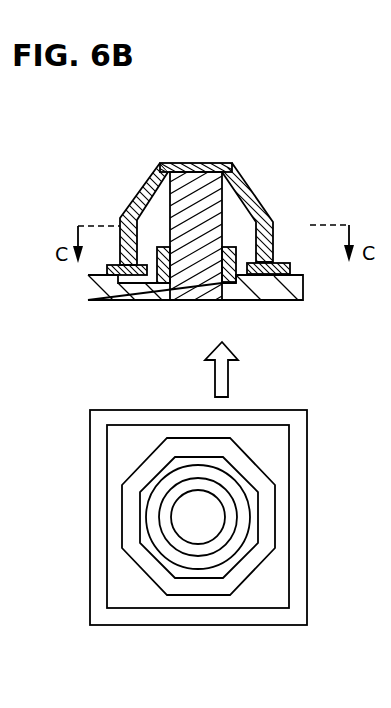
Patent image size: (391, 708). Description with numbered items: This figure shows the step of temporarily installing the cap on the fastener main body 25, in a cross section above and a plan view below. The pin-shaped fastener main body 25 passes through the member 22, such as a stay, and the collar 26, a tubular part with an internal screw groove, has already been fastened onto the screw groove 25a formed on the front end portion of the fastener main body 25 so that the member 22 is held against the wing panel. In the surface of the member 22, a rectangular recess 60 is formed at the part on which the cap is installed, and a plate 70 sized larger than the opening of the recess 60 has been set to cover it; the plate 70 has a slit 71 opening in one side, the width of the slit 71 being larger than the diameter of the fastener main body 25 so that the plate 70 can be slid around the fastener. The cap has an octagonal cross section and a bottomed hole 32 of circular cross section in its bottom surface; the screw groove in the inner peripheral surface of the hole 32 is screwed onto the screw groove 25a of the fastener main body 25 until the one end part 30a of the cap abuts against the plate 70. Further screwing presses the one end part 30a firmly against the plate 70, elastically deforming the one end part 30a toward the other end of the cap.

The member 22 is at (302, 283).
The fastener main body 25 is at (224, 197).
The screw groove 25a is at (124, 211).
The collar 26 is at (231, 243).
The one end part 30a is at (107, 264).
The hole 32 is at (180, 167).
The recess 60 is at (257, 282).
The plate 70 is at (291, 268).
The slit 71 is at (163, 600).